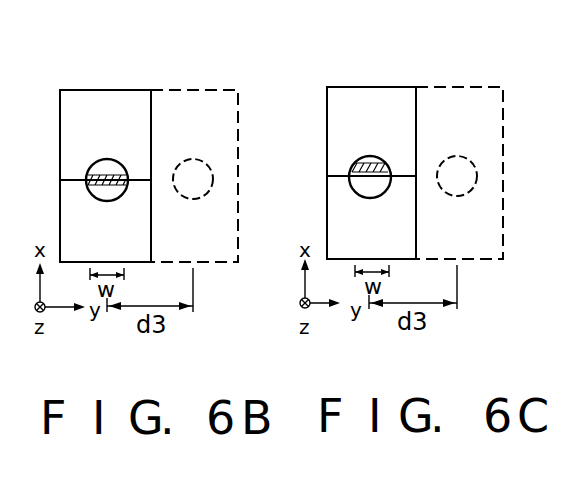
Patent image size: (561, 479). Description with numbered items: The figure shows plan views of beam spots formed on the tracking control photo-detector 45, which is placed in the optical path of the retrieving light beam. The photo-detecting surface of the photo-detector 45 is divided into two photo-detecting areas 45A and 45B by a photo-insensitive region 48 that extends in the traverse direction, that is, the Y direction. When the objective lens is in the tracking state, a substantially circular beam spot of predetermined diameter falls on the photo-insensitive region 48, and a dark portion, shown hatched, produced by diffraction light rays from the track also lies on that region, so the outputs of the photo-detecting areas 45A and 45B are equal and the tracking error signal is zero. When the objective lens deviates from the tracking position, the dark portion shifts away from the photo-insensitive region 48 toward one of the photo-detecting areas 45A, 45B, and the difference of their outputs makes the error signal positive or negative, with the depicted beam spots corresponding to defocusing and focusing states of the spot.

In FIG. 6B, the tracking control photo-detector 45 is at (105, 90).
In FIG. 6C, the tracking control photo-detector 45 is at (366, 87).
In FIG. 6B, the photo-detecting area 45A is at (66, 124).
In FIG. 6C, the photo-detecting area 45A is at (334, 125).
In FIG. 6B, the photo-detecting area 45B is at (66, 228).
In FIG. 6C, the photo-detecting area 45B is at (334, 228).
In FIG. 6B, the photo-insensitive region 48 is at (69, 181).
In FIG. 6C, the photo-insensitive region 48 is at (336, 177).